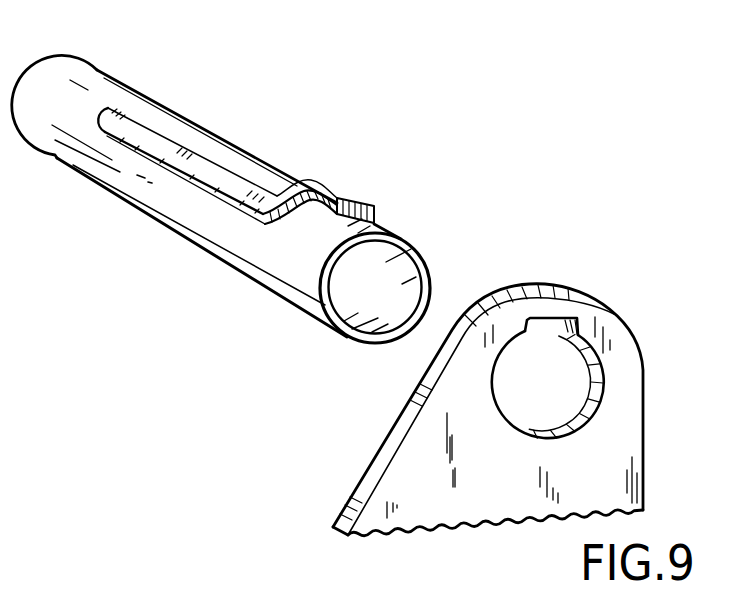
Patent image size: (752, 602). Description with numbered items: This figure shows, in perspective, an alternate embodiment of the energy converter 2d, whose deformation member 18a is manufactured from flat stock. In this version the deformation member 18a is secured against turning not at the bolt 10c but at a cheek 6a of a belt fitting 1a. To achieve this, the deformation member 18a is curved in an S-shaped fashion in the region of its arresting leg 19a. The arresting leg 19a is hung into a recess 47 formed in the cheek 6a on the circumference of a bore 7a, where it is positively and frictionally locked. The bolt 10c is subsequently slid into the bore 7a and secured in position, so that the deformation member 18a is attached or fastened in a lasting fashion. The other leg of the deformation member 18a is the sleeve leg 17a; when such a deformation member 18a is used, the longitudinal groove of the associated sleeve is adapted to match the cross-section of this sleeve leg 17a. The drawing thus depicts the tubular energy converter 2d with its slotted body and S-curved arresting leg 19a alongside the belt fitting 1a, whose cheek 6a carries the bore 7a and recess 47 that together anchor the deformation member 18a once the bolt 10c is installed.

The belt fitting 1a is at (413, 482).
The energy converter 2d is at (130, 228).
The cheek 6a is at (615, 338).
The bore 7a is at (573, 375).
The bolt 10c is at (222, 252).
The sleeve leg 17a is at (145, 133).
The deformation member 18a is at (203, 150).
The arresting leg 19a is at (337, 188).
The recess 47 is at (549, 318).